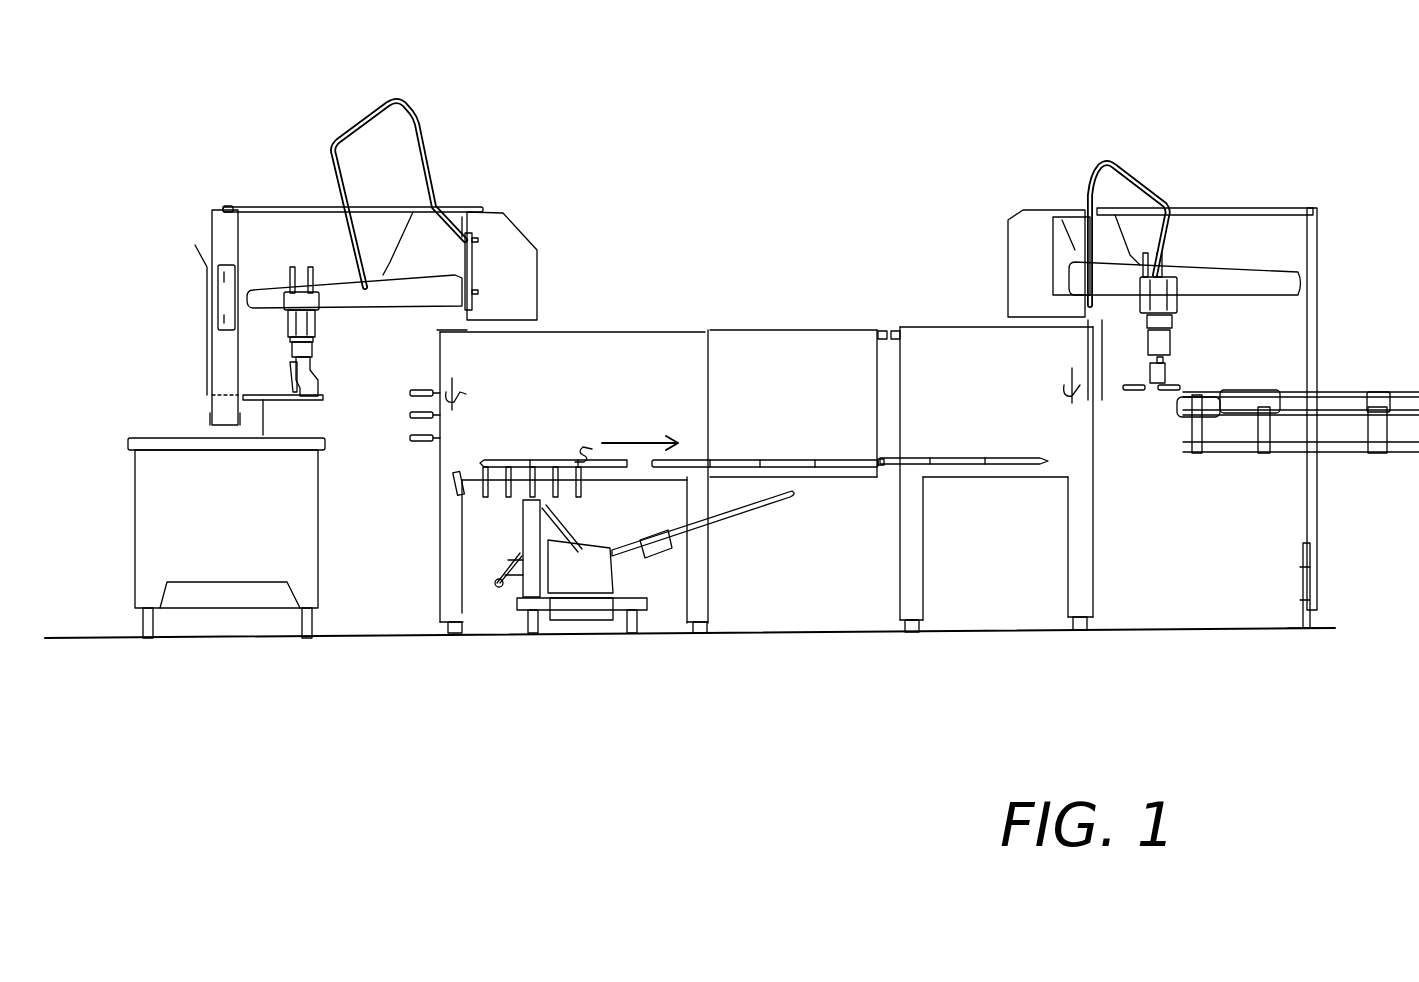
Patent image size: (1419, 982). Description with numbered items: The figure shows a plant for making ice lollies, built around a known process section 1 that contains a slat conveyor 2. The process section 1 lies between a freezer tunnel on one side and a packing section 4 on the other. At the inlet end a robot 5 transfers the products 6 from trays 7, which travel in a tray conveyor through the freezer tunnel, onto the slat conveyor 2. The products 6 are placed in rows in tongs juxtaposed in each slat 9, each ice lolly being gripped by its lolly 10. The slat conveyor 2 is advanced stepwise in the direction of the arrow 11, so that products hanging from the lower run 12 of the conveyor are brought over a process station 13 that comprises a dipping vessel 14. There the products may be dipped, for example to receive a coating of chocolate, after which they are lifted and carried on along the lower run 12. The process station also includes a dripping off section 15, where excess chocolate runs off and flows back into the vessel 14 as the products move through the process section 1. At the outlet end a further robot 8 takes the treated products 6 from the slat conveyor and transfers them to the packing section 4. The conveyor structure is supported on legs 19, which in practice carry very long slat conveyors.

The process section 1 is at (760, 237).
The slat conveyor 2 is at (842, 467).
The packing section 4 is at (1376, 371).
The robot 5 is at (447, 187).
The products 6 is at (312, 398).
The trays 7 is at (265, 398).
The further robot 8 is at (1188, 187).
The slat 9 is at (447, 383).
The lolly 10 is at (437, 443).
The arrow 11 is at (613, 440).
The lower run 12 is at (757, 451).
The process station 13 is at (602, 687).
The dipping vessel 14 is at (607, 575).
The dripping off section 15 is at (743, 510).
The legs 19 is at (462, 608).